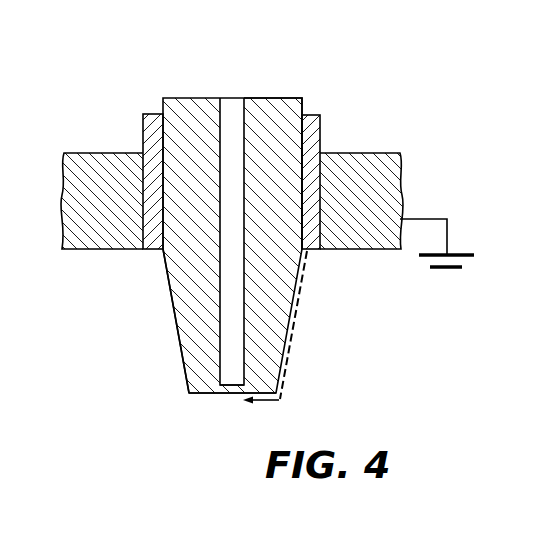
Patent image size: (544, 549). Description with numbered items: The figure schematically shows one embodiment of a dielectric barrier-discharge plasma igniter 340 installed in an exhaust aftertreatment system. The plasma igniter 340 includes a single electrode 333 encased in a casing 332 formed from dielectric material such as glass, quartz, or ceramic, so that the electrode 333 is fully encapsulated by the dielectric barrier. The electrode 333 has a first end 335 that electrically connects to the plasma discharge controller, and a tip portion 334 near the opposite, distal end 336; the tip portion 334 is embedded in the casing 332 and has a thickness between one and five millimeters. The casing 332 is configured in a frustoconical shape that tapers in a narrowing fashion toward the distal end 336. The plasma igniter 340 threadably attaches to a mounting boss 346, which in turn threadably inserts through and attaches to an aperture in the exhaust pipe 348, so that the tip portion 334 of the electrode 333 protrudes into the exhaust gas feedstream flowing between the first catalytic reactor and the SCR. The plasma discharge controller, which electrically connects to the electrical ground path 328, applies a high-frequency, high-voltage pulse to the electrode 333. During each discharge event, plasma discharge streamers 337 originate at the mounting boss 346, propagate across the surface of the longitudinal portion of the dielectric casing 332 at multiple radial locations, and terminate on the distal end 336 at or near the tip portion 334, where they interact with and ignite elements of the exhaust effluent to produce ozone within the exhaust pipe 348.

The dielectric barrier-discharge plasma igniter 340 is at (120, 114).
The electrode 333 is at (230, 98).
The first end 335 is at (280, 98).
The mounting boss 346 is at (321, 130).
The exhaust pipe 348 is at (401, 183).
The electrical ground path 328 is at (460, 247).
The distal end 336 is at (178, 390).
The casing 332 is at (201, 395).
The tip portion 334 is at (232, 395).
The plasma discharge streamers 337 is at (285, 362).